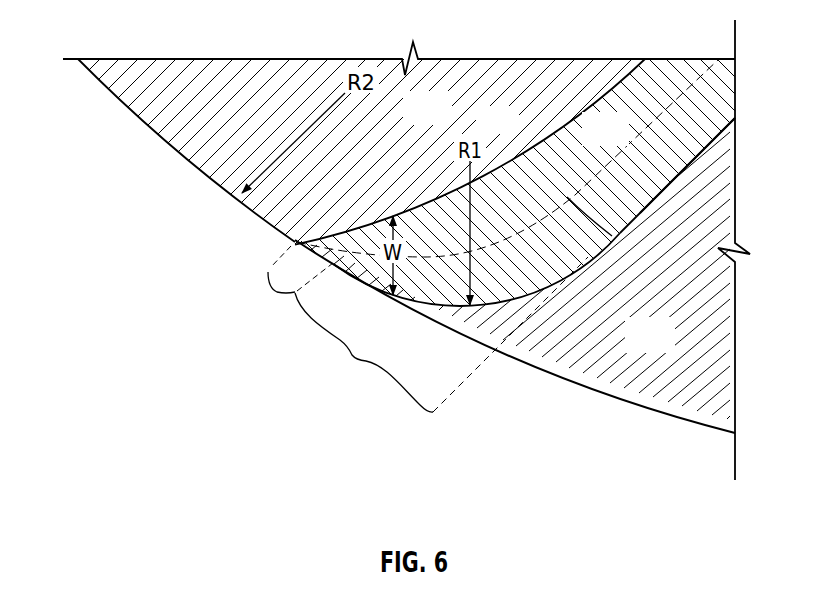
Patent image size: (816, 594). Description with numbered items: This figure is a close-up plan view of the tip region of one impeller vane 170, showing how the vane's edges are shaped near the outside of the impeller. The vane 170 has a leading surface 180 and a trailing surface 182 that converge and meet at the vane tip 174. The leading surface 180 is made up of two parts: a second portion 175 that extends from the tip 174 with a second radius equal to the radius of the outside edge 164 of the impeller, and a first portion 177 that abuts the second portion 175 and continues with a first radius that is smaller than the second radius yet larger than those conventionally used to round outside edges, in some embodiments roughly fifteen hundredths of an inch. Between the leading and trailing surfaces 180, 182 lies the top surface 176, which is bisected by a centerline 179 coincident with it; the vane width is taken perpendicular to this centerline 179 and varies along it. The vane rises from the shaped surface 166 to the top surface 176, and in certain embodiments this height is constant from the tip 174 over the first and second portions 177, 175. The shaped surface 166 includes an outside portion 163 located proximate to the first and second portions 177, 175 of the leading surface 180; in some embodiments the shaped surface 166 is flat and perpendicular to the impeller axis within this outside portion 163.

The outside portion 163 is at (669, 349).
The outside edge 164 is at (205, 176).
The shaped surface 166 is at (447, 120).
The vane 170 is at (662, 77).
The vane tip 174 is at (295, 243).
The second portion 175 is at (277, 292).
The top surface 176 is at (625, 141).
The first portion 177 is at (352, 356).
The centerline 179 is at (612, 236).
The leading surface 180 is at (665, 188).
The trailing surface 182 is at (548, 137).